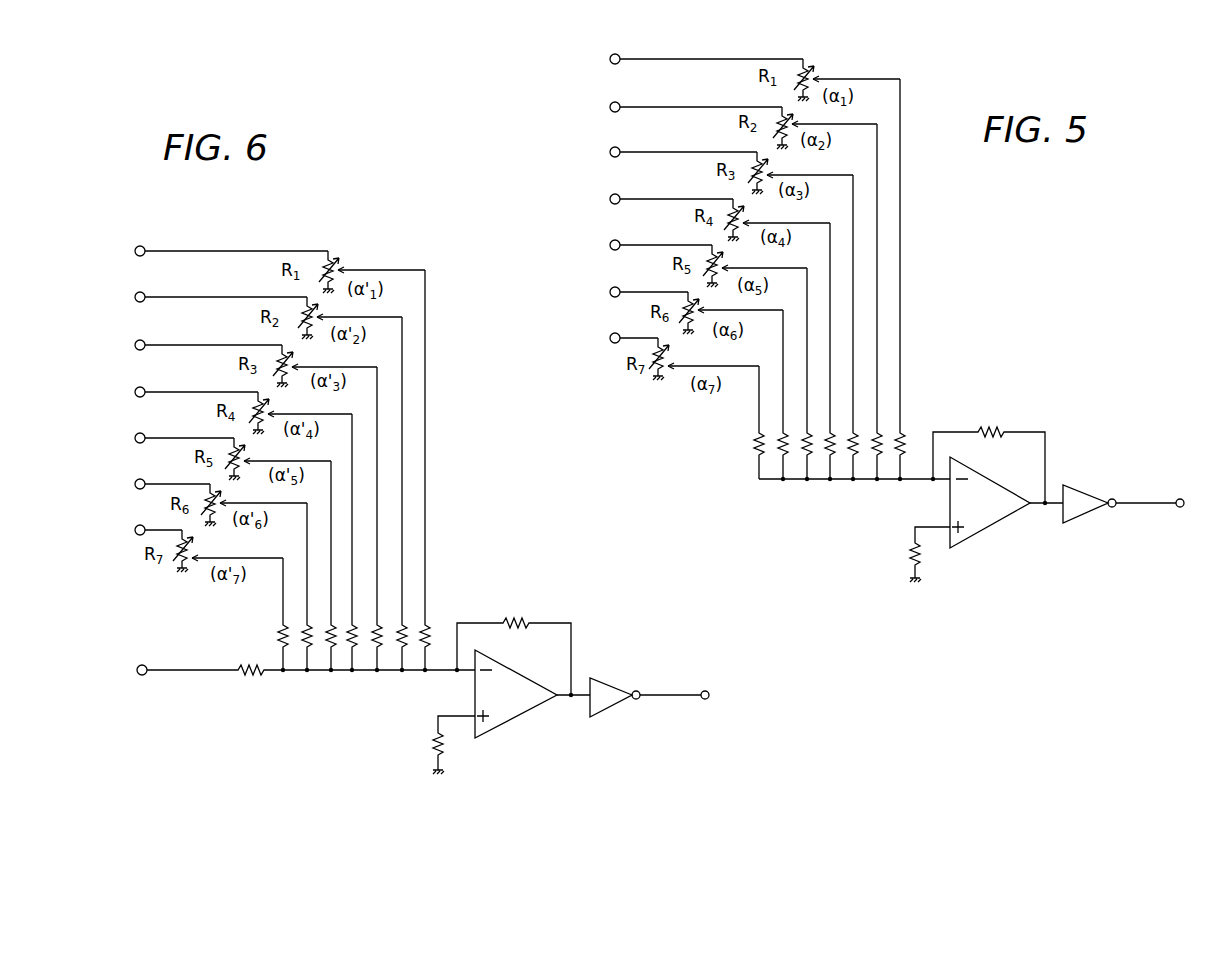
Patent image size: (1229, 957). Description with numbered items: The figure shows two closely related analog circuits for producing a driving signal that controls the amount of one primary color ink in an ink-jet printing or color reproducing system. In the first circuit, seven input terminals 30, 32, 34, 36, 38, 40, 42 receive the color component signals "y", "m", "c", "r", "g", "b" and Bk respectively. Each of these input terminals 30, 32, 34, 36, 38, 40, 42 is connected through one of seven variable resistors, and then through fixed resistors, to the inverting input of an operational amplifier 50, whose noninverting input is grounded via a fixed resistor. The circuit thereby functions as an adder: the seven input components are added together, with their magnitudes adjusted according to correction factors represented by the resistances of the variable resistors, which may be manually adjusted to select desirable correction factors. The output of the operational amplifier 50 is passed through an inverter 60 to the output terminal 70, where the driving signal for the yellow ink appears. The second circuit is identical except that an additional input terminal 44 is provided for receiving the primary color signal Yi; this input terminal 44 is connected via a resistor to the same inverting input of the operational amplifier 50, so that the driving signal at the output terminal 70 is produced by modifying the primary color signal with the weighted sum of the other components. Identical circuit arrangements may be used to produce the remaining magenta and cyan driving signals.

In FIG. 5, the input terminal 30 is at (608, 60).
In FIG. 6, the input terminal 30 is at (132, 252).
In FIG. 5, the input terminal 32 is at (608, 108).
In FIG. 6, the input terminal 32 is at (132, 298).
In FIG. 5, the input terminal 34 is at (608, 153).
In FIG. 6, the input terminal 34 is at (132, 346).
In FIG. 5, the input terminal 36 is at (608, 200).
In FIG. 6, the input terminal 36 is at (132, 393).
In FIG. 5, the input terminal 38 is at (608, 246).
In FIG. 6, the input terminal 38 is at (132, 439).
In FIG. 5, the input terminal 40 is at (608, 293).
In FIG. 6, the input terminal 40 is at (132, 485).
In FIG. 5, the input terminal 42 is at (608, 339).
In FIG. 6, the input terminal 42 is at (132, 531).
In FIG. 6, the input terminal 44 is at (134, 667).
In FIG. 5, the operational amplifier 50 is at (996, 521).
In FIG. 6, the operational amplifier 50 is at (522, 712).
In FIG. 5, the inverter 60 is at (1086, 515).
In FIG. 6, the inverter 60 is at (608, 709).
In FIG. 5, the output terminal 70 is at (1185, 502).
In FIG. 6, the output terminal 70 is at (710, 694).